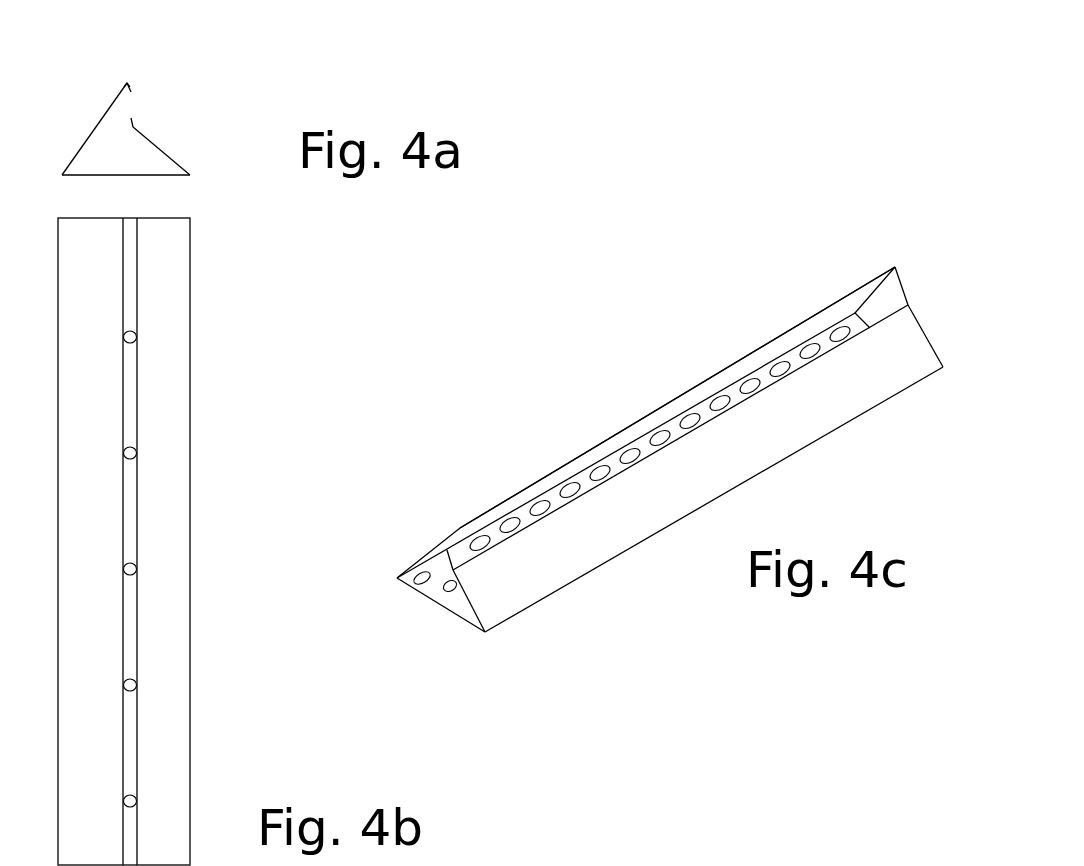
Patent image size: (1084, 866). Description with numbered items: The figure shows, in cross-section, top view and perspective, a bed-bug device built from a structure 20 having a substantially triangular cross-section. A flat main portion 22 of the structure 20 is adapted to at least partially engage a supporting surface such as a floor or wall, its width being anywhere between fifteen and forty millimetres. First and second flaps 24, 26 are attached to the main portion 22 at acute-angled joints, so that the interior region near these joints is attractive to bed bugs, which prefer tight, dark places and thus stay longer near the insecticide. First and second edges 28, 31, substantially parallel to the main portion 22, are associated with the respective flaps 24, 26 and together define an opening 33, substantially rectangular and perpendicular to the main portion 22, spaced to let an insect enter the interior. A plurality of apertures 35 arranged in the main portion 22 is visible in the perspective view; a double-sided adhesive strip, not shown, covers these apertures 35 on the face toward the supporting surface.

In FIG. 4B, the structure 20 is at (193, 763).
In FIG. 4C, the structure 20 is at (653, 398).
In FIG. 4A, the flat main portion 22 is at (112, 184).
In FIG. 4C, the flat main portion 22 is at (437, 611).
In FIG. 4A, the first flap 24 is at (93, 118).
In FIG. 4C, the first flap 24 is at (543, 464).
In FIG. 4A, the second flap 26 is at (163, 142).
In FIG. 4C, the second flap 26 is at (878, 343).
In FIG. 4A, the first edge 28 is at (127, 82).
In FIG. 4A, the second edge 31 is at (133, 125).
In FIG. 4A, the opening 33 is at (124, 100).
In FIG. 4C, the opening 33 is at (898, 288).
In FIG. 4B, the apertures 35 is at (136, 333).
In FIG. 4C, the apertures 35 is at (572, 489).